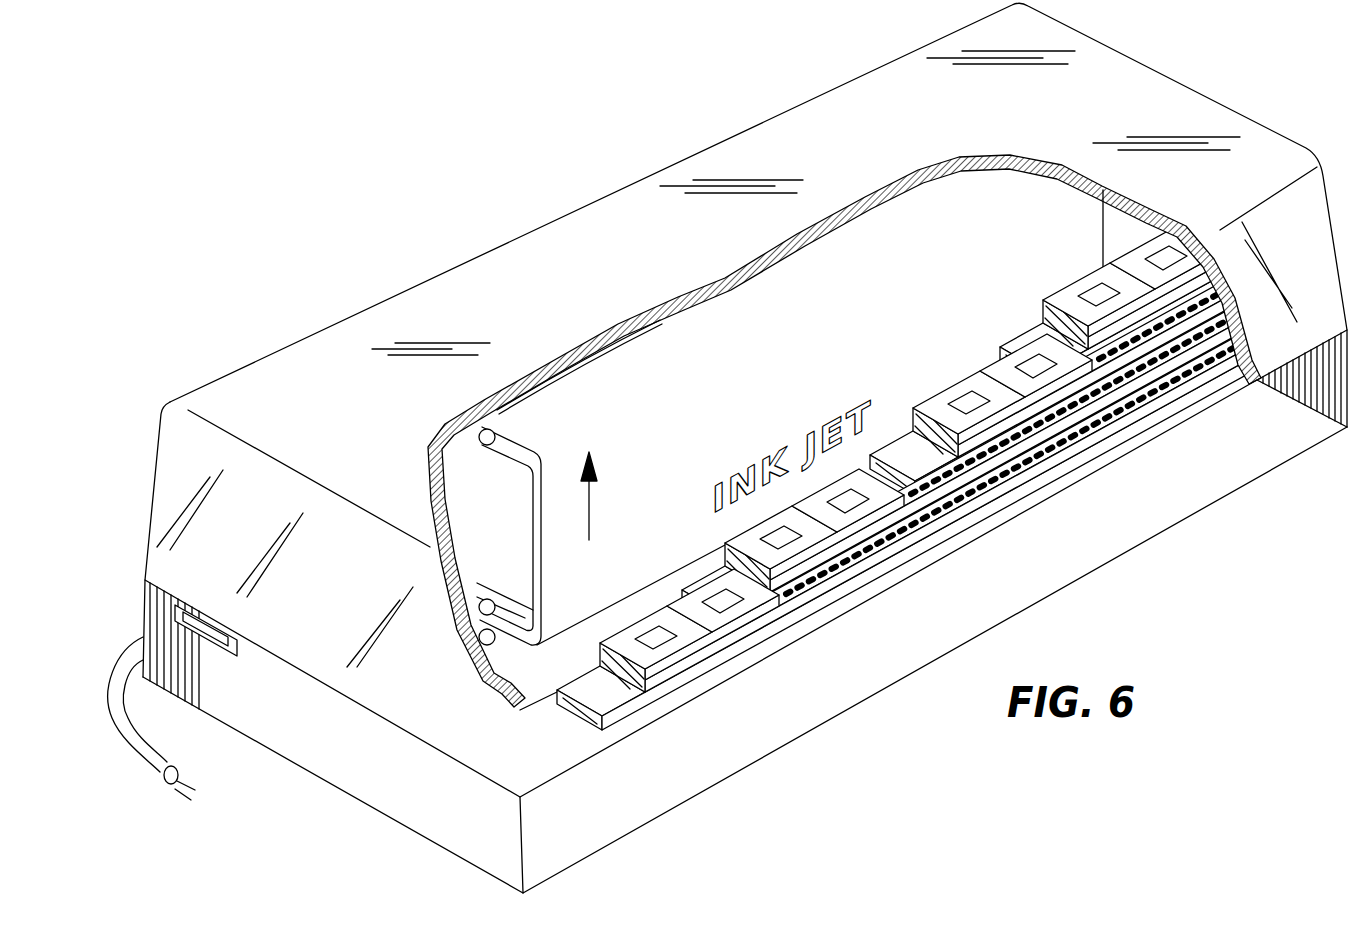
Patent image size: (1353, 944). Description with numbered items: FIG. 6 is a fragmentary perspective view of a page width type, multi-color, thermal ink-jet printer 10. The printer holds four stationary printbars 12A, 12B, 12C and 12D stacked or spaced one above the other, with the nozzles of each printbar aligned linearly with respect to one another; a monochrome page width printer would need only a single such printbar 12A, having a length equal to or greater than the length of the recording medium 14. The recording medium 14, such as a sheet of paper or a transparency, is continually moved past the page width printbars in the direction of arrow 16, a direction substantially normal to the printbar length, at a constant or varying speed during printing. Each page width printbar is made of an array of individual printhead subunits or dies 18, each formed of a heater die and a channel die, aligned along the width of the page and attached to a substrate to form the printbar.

The thermal ink-jet printer 10 is at (524, 215).
The stationary printbar 12A is at (916, 537).
The stationary printbar 12B is at (949, 522).
The stationary printbar 12C is at (900, 424).
The stationary printbar 12D is at (1028, 322).
The recording medium 14 is at (558, 593).
The arrow 16 is at (592, 503).
The printhead dies 18 is at (690, 580).